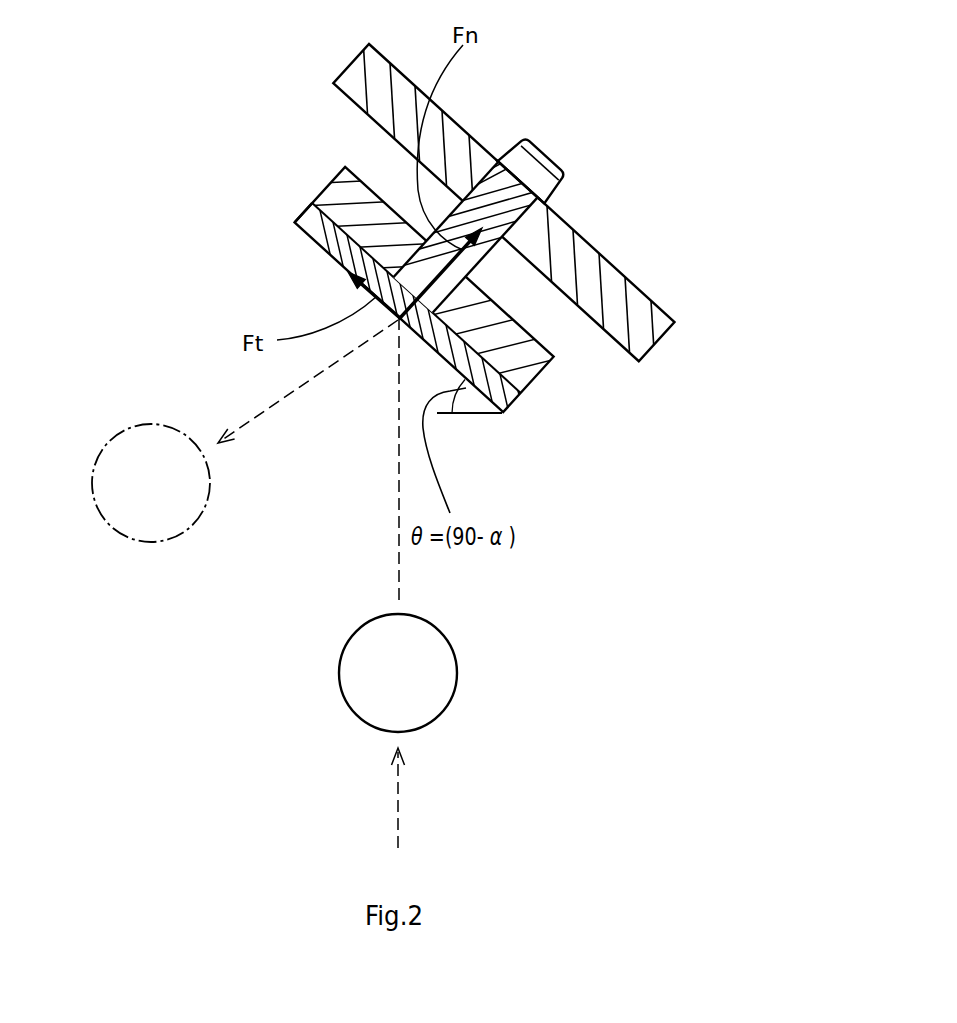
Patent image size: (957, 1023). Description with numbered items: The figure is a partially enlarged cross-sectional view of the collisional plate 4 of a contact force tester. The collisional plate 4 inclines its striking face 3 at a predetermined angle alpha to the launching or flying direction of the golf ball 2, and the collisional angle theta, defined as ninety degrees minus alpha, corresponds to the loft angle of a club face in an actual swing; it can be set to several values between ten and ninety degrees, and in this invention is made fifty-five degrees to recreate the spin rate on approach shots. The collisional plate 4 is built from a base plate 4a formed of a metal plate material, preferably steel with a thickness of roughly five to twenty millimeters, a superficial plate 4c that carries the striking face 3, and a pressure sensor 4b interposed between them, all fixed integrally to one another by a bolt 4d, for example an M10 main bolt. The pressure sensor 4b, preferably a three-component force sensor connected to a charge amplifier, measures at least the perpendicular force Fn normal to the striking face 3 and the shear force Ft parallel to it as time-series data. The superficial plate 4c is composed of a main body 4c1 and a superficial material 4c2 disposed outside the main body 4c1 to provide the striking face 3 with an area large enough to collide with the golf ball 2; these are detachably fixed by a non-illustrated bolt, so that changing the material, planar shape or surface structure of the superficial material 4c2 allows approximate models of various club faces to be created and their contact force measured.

The golf ball 2 is at (423, 657).
The striking face 3 is at (310, 235).
The collisional plate 4 is at (455, 256).
The base plate 4a is at (651, 341).
The pressure sensor 4b is at (540, 308).
The superficial plate 4c is at (523, 375).
The main body 4c1 is at (343, 182).
The superficial material 4c2 is at (312, 213).
The bolt 4d is at (549, 153).